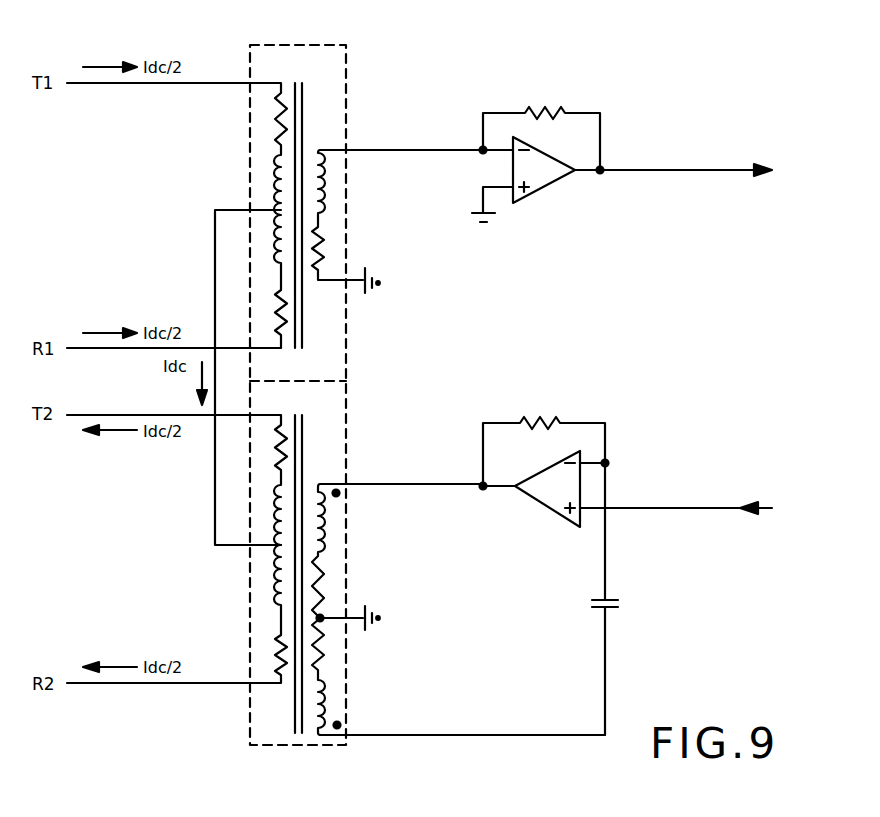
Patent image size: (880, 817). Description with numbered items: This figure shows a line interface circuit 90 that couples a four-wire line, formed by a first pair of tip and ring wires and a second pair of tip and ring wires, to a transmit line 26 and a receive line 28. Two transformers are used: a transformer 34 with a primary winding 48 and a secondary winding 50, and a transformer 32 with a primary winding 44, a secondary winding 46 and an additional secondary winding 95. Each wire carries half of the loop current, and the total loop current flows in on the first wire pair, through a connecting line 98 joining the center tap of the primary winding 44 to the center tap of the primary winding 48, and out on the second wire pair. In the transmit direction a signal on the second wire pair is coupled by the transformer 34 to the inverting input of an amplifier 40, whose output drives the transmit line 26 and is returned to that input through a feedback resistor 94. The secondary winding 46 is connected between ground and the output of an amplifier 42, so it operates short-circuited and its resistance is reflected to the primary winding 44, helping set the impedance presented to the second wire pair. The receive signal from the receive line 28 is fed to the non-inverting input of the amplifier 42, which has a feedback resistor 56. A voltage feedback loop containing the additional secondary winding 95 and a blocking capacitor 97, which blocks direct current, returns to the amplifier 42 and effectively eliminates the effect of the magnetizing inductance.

The line interface circuit 90 is at (400, 50).
The transformer 34 is at (347, 333).
The primary winding 48 is at (281, 178).
The transmit transformer secondary winding 50 is at (326, 180).
The connecting line 98 is at (215, 248).
The transformer 32 is at (347, 668).
The primary winding 44 is at (281, 584).
The secondary winding 46 is at (326, 522).
The additional secondary winding 95 is at (326, 706).
The amplifier 40 is at (545, 190).
The feedback resistor 94 is at (535, 113).
The transmit line 26 is at (686, 170).
The amplifier 42 is at (545, 505).
The feedback resistor 56 is at (540, 423).
The receive line 28 is at (645, 510).
The blocking capacitor 97 is at (620, 603).